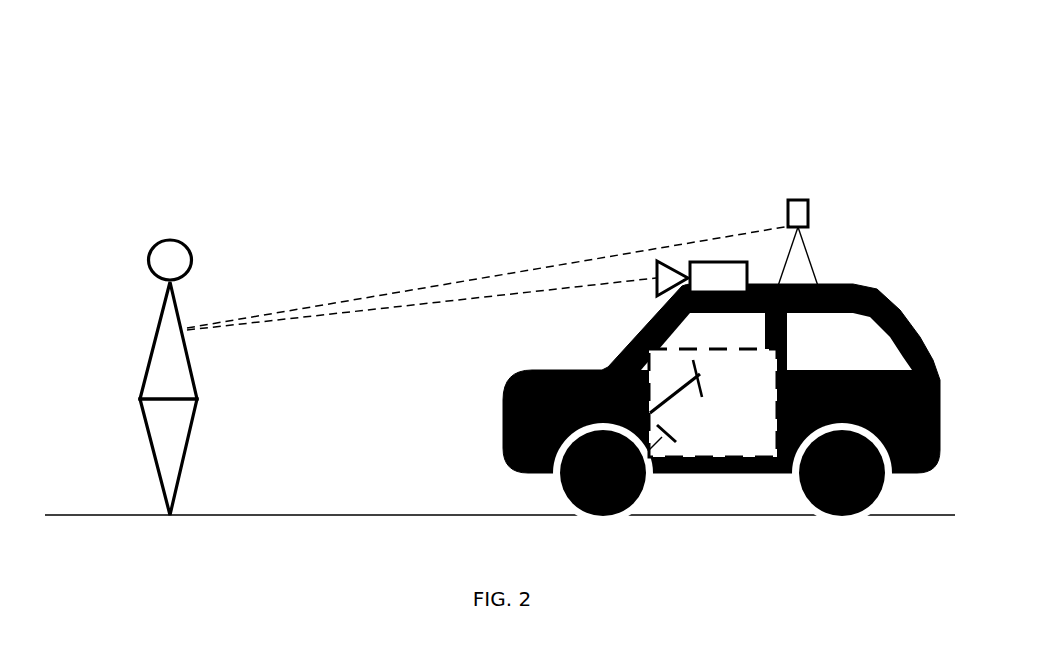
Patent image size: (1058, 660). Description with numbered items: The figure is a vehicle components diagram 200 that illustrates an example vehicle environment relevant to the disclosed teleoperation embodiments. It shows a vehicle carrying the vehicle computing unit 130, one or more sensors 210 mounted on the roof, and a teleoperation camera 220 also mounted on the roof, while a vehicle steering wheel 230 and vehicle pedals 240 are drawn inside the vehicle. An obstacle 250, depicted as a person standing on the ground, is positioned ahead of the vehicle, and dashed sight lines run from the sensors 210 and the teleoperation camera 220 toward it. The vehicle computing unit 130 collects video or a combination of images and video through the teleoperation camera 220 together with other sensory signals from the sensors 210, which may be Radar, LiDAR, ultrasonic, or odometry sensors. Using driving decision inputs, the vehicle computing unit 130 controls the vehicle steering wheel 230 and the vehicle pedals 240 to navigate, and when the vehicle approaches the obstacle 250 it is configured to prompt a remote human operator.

The vehicle components diagram 200 is at (826, 101).
The vehicle computing unit 130 is at (721, 403).
The sensors 210 is at (821, 200).
The teleoperation camera 220 is at (701, 254).
The vehicle steering wheel 230 is at (708, 388).
The vehicle pedals 240 is at (683, 437).
The obstacle 250 is at (203, 255).